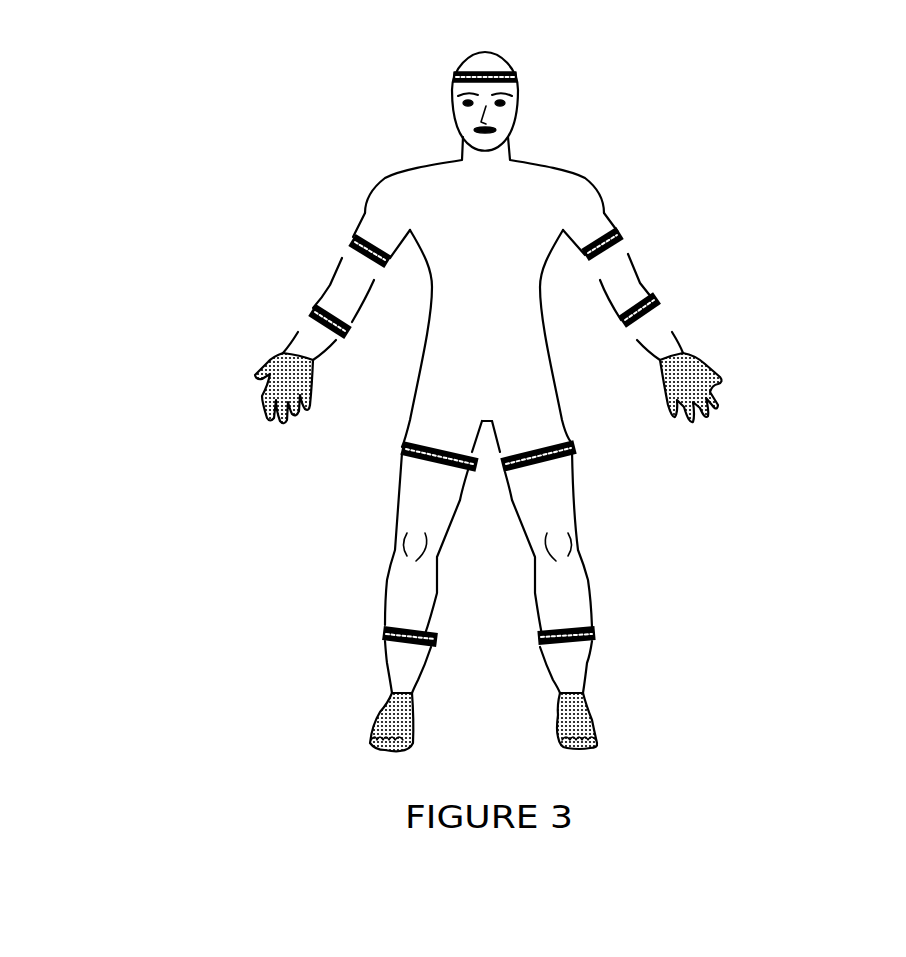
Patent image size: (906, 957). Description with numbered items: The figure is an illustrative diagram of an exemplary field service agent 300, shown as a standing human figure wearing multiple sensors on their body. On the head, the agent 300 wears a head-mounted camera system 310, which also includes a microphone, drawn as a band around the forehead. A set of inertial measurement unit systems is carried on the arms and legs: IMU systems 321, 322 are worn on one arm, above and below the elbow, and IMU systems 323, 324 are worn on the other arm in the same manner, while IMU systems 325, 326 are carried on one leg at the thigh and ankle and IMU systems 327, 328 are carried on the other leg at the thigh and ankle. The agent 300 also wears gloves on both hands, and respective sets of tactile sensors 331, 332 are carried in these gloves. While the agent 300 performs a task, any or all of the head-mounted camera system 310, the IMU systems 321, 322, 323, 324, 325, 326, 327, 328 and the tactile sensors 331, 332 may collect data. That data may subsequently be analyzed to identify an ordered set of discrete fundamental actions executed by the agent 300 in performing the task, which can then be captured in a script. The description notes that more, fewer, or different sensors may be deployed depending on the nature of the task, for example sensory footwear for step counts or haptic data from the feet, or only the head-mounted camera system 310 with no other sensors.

The field service agent 300 is at (93, 82).
The head-mounted camera system 310 is at (518, 80).
The IMU system 321 is at (353, 243).
The IMU system 322 is at (312, 308).
The IMU system 323 is at (622, 233).
The IMU system 324 is at (657, 298).
The IMU system 325 is at (402, 450).
The IMU system 326 is at (385, 635).
The IMU system 327 is at (630, 425).
The IMU system 328 is at (595, 632).
The set of tactile sensors 331 is at (262, 393).
The set of tactile sensors 332 is at (705, 400).